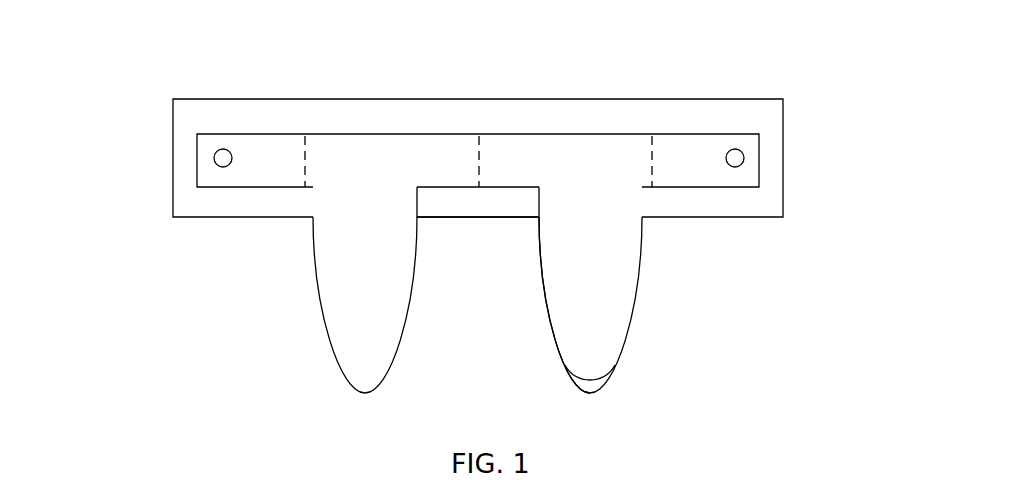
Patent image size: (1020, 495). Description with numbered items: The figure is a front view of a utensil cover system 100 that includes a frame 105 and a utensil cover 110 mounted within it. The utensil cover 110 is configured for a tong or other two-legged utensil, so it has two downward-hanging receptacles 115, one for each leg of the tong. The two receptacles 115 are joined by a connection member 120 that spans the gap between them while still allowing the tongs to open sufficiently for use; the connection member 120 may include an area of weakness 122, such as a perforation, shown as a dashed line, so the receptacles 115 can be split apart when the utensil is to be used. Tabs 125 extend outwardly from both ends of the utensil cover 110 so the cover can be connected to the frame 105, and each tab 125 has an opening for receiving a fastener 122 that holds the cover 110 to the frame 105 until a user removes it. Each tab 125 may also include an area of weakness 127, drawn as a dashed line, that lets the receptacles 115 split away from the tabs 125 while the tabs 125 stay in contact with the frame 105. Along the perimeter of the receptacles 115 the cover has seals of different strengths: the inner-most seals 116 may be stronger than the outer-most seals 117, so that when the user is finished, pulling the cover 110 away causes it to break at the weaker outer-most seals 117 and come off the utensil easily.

The utensil cover system 100 is at (124, 116).
The frame 105 is at (783, 172).
The utensil cover 110 is at (600, 110).
The receptacle 115 is at (322, 293).
The inner-most seal 116 is at (552, 327).
The outer-most seal 117 is at (622, 347).
The connection member 120 is at (453, 120).
The area of weakness 122 is at (223, 167).
The tab 125 is at (248, 133).
The area of weakness 127 is at (305, 134).